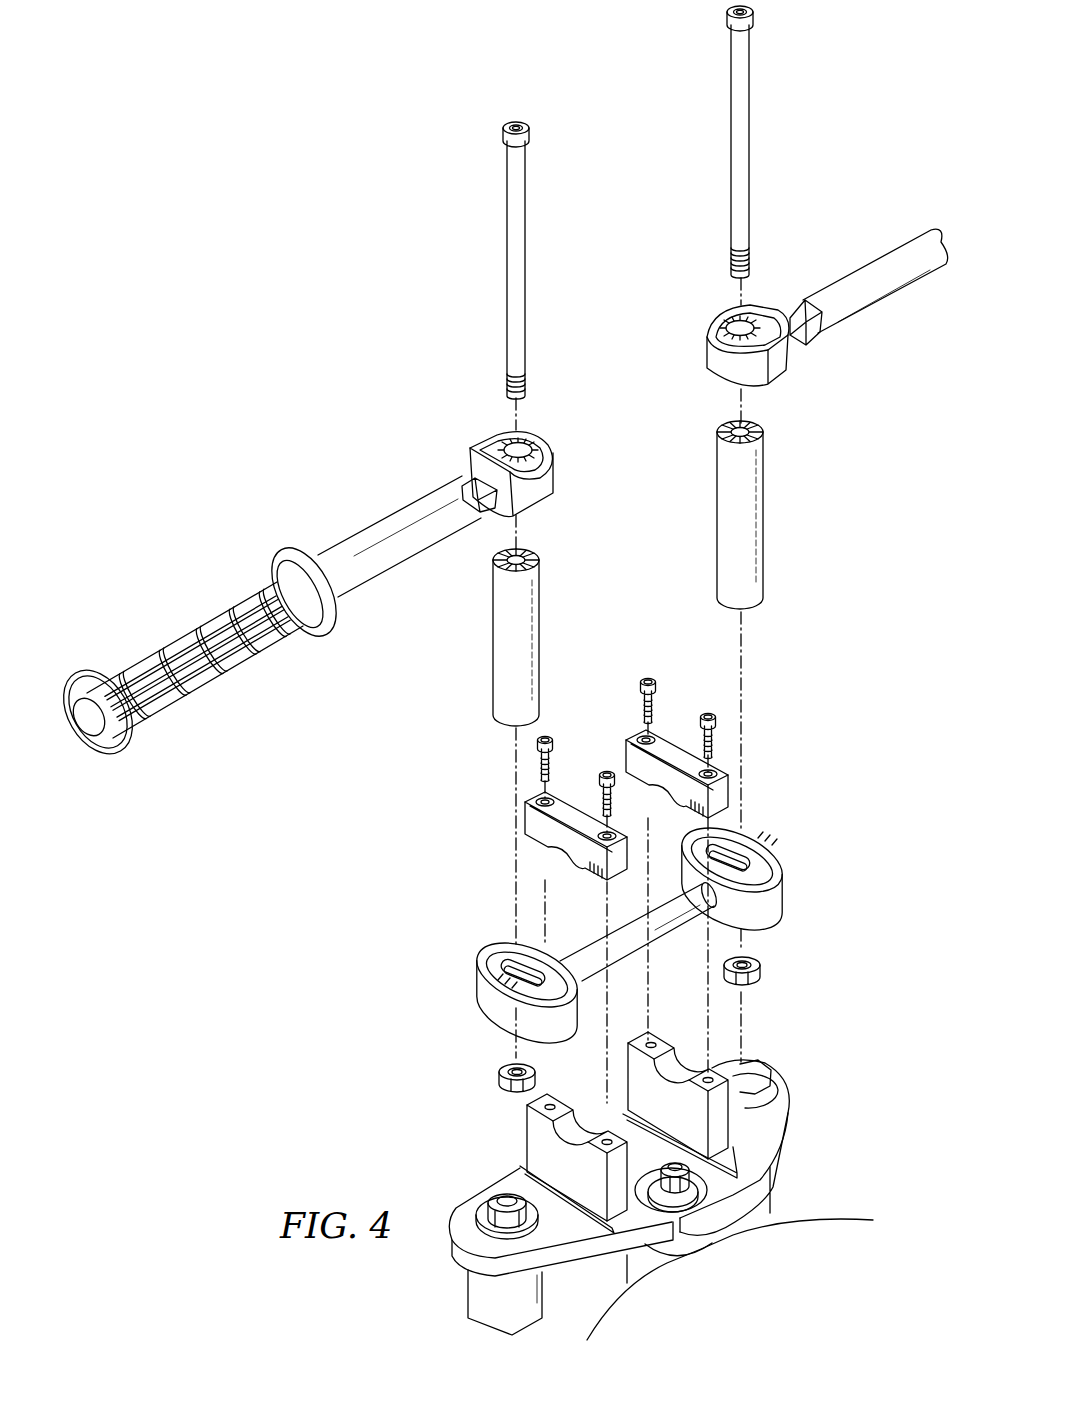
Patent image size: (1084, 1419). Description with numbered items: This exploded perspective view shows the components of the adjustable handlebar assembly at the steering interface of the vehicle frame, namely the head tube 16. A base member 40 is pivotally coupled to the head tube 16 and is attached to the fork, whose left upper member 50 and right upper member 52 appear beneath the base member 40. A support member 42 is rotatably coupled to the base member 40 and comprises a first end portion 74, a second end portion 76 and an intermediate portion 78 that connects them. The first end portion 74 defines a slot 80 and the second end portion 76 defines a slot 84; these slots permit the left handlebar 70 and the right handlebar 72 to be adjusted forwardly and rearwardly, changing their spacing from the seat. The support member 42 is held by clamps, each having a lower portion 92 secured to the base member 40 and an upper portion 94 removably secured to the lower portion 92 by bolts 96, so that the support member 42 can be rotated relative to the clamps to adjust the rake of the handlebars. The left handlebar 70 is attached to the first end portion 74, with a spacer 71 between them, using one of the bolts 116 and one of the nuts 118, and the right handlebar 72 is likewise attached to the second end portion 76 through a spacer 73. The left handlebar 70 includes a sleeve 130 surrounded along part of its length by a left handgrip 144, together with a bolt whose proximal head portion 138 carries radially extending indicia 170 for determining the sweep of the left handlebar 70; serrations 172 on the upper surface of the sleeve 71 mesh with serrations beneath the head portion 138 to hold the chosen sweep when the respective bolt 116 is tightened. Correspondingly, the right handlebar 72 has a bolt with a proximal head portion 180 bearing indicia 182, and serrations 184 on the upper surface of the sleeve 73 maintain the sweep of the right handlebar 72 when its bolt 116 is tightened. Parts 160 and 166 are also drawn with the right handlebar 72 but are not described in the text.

The head tube 16 is at (657, 1257).
The base member 40 is at (640, 1152).
The support member 42 is at (631, 925).
The left upper member 50 is at (468, 1295).
The right upper member 52 is at (780, 1190).
The left handlebar 70 is at (436, 508).
The spacer 71 is at (475, 637).
The right handlebar 72 is at (803, 292).
The spacer 73 is at (749, 500).
The first end portion 74 is at (502, 974).
The second end portion 76 is at (756, 868).
The intermediate portion 78 is at (670, 945).
The slot 80 is at (527, 965).
The slot 84 is at (748, 858).
The lower portion 92 is at (538, 1153).
The upper portion 94 is at (535, 842).
The bolts 96 is at (642, 692).
The bolts 116 is at (507, 252).
The nuts 118 is at (765, 975).
The sleeve 130 is at (413, 500).
The proximal head portion 138 is at (553, 470).
The left handgrip 144 is at (186, 630).
The lever arm 160 is at (905, 240).
The hex nut 166 is at (790, 303).
The indicia 170 is at (527, 453).
The serrations 172 is at (497, 554).
The proximal head portion 180 is at (777, 366).
The indicia 182 is at (751, 333).
The serrations 184 is at (727, 432).